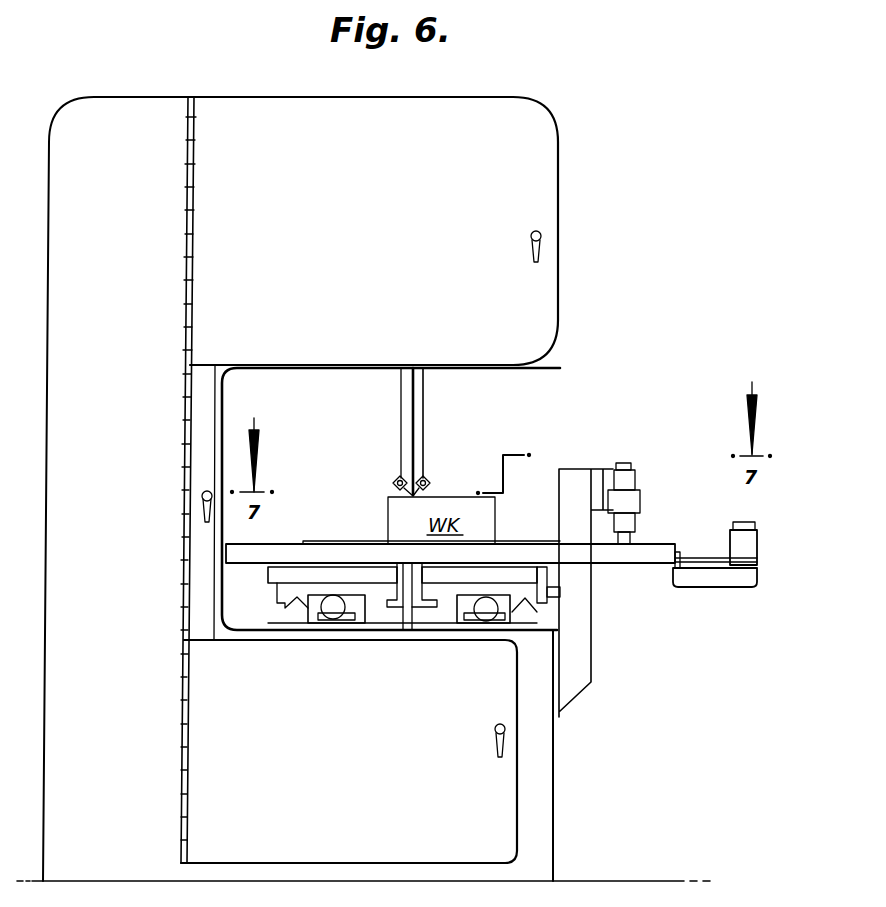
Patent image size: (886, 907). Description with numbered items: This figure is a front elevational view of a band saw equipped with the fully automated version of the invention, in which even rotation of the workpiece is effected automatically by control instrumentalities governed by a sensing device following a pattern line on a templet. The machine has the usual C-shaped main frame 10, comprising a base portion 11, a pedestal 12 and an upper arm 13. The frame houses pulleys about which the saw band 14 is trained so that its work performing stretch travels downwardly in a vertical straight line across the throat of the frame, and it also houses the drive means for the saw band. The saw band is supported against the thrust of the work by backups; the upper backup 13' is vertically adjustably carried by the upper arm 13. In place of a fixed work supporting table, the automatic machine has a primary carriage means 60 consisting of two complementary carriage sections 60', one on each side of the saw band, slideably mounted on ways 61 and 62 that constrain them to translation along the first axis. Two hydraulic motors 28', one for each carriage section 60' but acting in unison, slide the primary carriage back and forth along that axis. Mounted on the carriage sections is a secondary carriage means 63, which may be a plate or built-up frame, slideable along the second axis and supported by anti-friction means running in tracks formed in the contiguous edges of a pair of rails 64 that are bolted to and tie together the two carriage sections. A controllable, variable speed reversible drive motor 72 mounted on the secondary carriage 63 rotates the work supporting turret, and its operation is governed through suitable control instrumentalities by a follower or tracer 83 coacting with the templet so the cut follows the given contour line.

The main frame 10 is at (632, 312).
The base portion 11 is at (360, 771).
The pedestal 12 is at (124, 500).
The upper arm 13 is at (374, 231).
The upper backup 13' is at (434, 475).
The saw band 14 is at (413, 422).
The hydraulic motor 28' is at (409, 634).
The primary carriage means 60 is at (388, 656).
The carriage section 60' is at (436, 585).
The way 61 is at (437, 607).
The way 62 is at (295, 600).
The secondary carriage means 63 is at (350, 531).
The rail 64 is at (283, 543).
The drive motor 72 is at (755, 541).
The tracer 83 is at (640, 534).